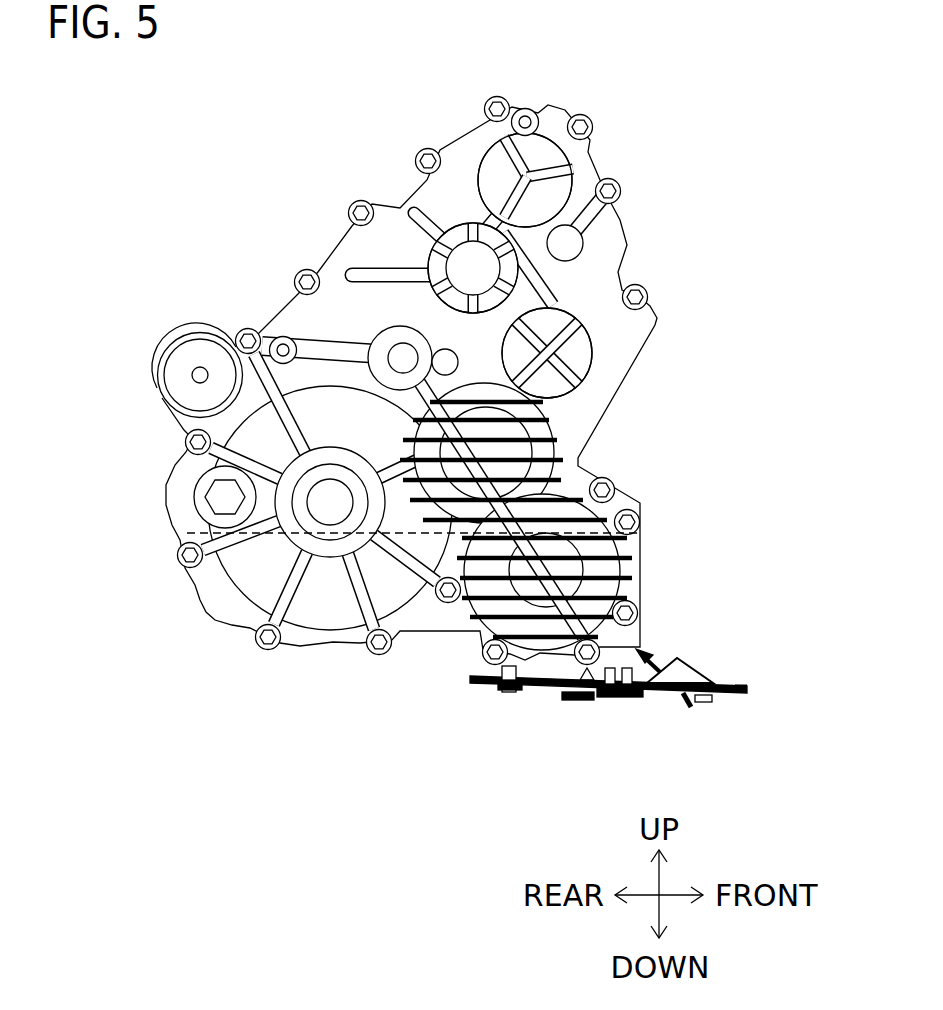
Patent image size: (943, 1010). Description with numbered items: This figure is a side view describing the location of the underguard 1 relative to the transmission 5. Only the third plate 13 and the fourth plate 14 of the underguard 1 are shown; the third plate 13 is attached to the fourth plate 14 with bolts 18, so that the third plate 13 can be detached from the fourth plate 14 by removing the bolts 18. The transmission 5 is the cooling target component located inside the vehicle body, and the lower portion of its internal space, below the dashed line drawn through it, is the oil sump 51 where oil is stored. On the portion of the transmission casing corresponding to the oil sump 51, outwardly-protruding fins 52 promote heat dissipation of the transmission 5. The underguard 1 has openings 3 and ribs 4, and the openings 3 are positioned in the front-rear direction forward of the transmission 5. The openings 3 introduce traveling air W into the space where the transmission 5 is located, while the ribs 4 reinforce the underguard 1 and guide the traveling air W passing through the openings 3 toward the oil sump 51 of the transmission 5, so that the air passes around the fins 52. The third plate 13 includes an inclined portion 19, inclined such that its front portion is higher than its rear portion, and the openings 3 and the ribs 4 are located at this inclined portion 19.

The transmission 5 is at (303, 225).
The oil sump 51 is at (207, 588).
The fins 52 is at (565, 438).
The underguard 1 is at (582, 685).
The openings 3 is at (673, 703).
The ribs 4 is at (697, 680).
The third plate 13 is at (740, 684).
The fourth plate 14 is at (533, 690).
The bolts 18 is at (590, 707).
The inclined portion 19 is at (723, 697).
The traveling air W is at (663, 680).